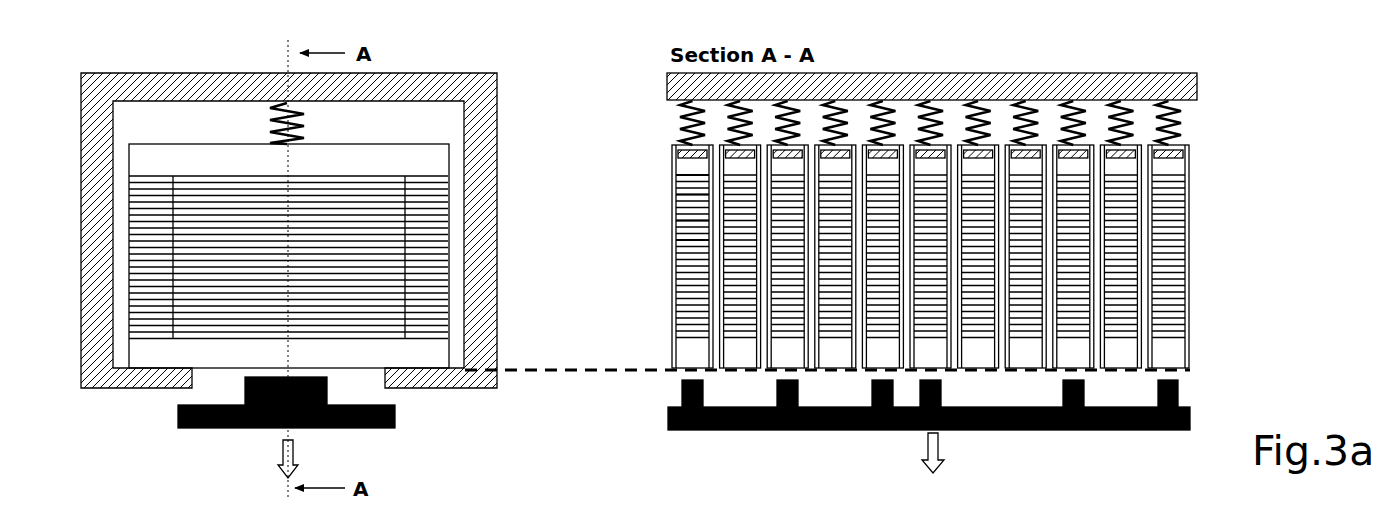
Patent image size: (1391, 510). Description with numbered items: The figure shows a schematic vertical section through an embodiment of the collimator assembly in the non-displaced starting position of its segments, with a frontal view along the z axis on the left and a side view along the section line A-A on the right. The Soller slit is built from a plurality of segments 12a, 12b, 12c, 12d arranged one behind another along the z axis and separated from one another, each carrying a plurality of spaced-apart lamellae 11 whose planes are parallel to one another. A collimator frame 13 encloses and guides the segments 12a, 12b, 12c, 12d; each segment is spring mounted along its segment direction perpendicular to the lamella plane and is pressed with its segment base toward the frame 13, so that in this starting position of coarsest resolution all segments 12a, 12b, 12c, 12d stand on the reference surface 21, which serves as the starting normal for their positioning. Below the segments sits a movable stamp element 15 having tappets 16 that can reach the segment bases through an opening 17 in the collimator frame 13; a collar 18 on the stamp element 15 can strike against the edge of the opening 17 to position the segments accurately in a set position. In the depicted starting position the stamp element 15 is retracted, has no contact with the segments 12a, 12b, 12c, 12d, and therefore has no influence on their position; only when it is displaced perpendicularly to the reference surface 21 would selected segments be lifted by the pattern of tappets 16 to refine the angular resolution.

The lamellae 11 is at (1189, 182).
The segment 12a is at (672, 173).
The segment 12b is at (672, 195).
The segment 12c is at (672, 218).
The segment 12d is at (672, 240).
The collimator frame 13 is at (667, 80).
The stamp element 15 is at (260, 428).
The tappet 16 is at (245, 384).
The opening 17 is at (362, 385).
The collar 18 is at (180, 429).
The reference surface 21 is at (465, 375).